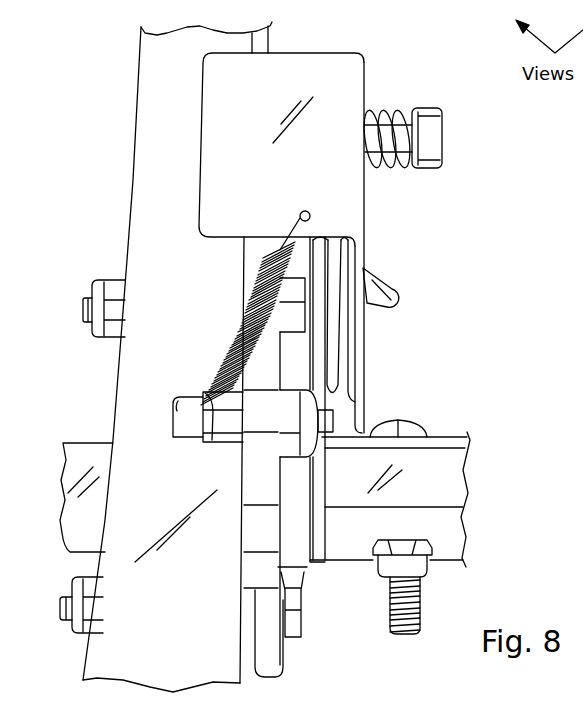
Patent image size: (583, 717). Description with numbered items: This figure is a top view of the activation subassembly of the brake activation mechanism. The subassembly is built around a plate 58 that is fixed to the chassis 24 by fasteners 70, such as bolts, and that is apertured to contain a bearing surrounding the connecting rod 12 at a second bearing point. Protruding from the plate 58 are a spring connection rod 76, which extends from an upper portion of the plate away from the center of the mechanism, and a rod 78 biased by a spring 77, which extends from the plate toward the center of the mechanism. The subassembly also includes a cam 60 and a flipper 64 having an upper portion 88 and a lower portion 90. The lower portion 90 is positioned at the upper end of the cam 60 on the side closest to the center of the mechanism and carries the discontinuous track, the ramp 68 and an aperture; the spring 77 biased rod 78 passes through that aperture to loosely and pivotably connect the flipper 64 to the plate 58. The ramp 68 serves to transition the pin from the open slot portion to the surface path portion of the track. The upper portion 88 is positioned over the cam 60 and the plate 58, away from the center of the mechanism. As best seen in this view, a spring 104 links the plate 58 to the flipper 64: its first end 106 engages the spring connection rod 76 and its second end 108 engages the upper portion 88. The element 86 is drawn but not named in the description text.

The connecting rod 12 is at (432, 470).
The chassis 24 is at (137, 645).
The plate 58 is at (262, 540).
The cam 60 is at (295, 527).
The flipper 64 is at (366, 203).
The ramp 68 is at (388, 282).
The fasteners 70 is at (75, 592).
The spring connection rod 76 is at (181, 404).
The spring 77 is at (388, 108).
The spring biased rod 78 is at (444, 141).
The stop 86 is at (403, 423).
The upper portion 88 is at (284, 68).
The lower portion 90 is at (362, 347).
The spring 104 is at (237, 300).
The first end 106 is at (148, 443).
The second end 108 is at (293, 208).